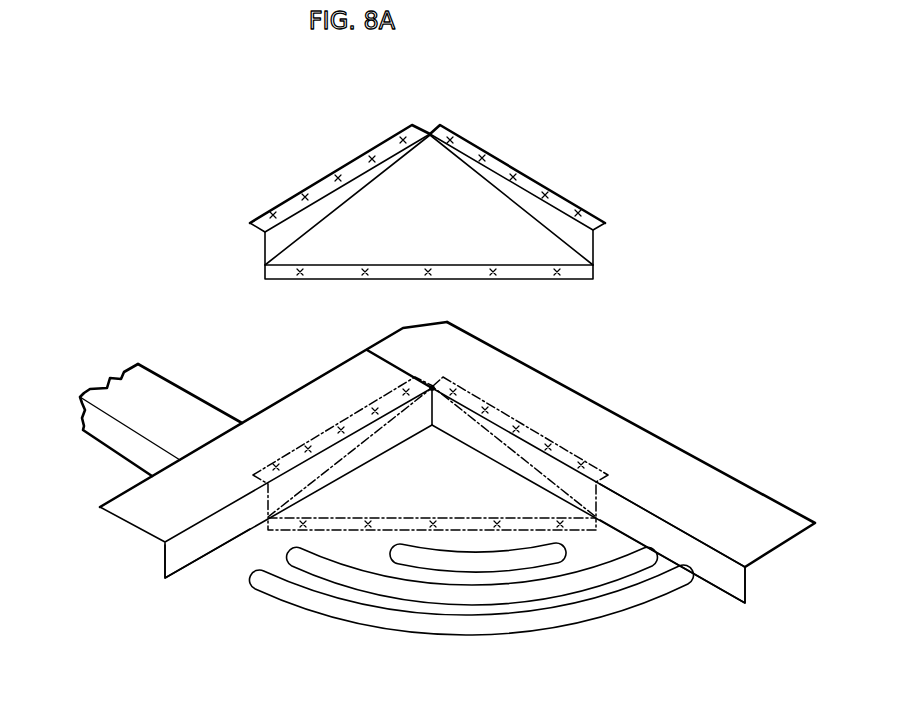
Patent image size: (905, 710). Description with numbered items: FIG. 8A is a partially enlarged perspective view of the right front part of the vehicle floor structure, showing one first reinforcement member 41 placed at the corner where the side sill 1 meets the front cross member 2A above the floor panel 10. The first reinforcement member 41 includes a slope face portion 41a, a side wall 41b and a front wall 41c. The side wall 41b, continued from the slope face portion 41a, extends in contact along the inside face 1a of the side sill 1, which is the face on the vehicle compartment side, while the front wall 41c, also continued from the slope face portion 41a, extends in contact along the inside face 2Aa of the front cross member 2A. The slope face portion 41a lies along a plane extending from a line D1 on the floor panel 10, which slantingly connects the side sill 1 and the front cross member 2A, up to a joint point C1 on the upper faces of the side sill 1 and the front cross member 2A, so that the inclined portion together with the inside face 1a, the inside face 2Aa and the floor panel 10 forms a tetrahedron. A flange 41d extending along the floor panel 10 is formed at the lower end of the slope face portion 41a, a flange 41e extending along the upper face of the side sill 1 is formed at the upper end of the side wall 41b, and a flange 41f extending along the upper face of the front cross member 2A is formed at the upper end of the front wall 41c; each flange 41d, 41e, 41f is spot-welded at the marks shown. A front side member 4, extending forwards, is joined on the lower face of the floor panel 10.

The side sill 1 is at (687, 467).
The inside face of the side sill 1a is at (690, 557).
The front cross member 2A is at (132, 500).
The inside face of the front cross member 2Aa is at (177, 548).
The front side member 4 is at (172, 398).
The floor panel 10 is at (665, 612).
The first reinforcement member 41 is at (435, 202).
The slope face portion 41a is at (367, 243).
The side wall 41b is at (585, 240).
The front wall 41c is at (277, 239).
The flange 41d is at (513, 272).
The flange 41e is at (532, 180).
The flange 41f is at (328, 187).
The joint point C1 is at (431, 387).
The line D1 is at (430, 518).